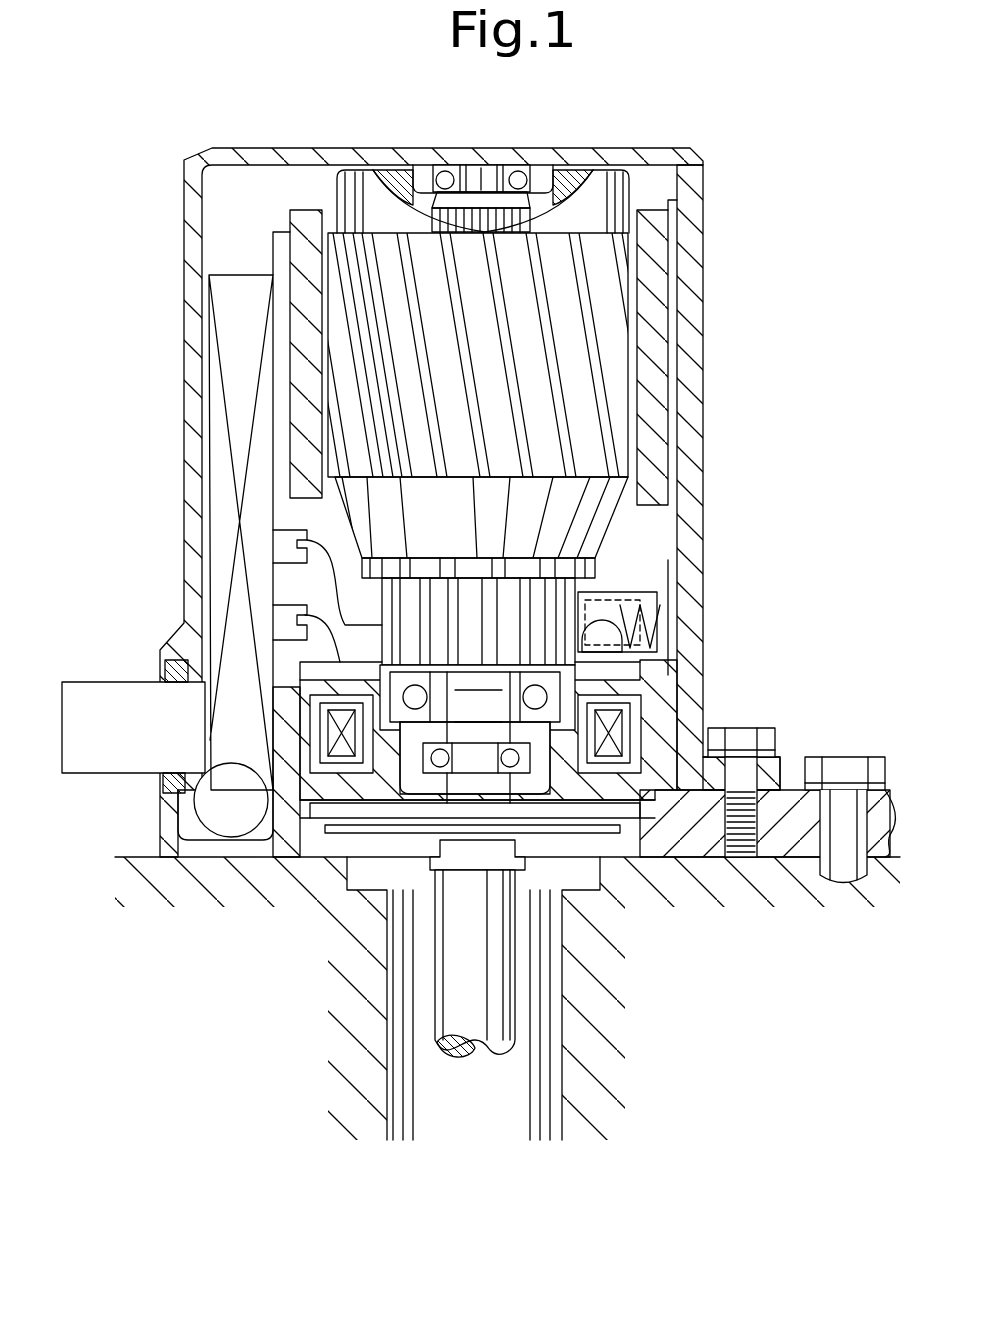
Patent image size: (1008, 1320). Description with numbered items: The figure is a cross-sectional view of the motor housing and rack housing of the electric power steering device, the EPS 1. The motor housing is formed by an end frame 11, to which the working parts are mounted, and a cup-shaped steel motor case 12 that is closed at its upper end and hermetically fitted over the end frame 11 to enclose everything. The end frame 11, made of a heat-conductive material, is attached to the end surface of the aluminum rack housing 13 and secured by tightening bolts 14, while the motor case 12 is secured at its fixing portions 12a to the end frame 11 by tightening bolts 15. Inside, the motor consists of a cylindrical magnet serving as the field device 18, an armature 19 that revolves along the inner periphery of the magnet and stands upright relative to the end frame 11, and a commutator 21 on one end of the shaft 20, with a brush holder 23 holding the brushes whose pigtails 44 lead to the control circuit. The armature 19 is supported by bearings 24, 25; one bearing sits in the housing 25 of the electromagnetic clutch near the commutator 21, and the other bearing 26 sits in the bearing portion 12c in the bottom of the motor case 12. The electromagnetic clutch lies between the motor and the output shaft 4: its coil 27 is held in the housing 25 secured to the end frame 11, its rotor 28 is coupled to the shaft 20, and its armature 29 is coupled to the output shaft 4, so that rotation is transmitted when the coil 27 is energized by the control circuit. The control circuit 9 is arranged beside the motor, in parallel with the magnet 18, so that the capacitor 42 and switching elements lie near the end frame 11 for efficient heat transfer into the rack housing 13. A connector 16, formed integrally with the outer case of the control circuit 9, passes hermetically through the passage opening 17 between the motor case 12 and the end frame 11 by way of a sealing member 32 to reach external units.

The EPS 1 is at (612, 125).
The output shaft 4 is at (498, 1015).
The control circuit 9 is at (238, 398).
The end frame 11 is at (885, 862).
The motor case 12 is at (703, 250).
The fixing portions 12a is at (770, 768).
The bearing portion 12c is at (437, 170).
The rack housing 13 is at (118, 853).
The bolts 14 is at (860, 758).
The bolts 15 is at (760, 730).
The connector 16 is at (90, 682).
The passage opening 17 is at (165, 678).
The field device 18 is at (655, 325).
The armature 19 is at (595, 521).
The shaft 20 is at (625, 640).
The commutator 21 is at (545, 595).
The brush holder 23 is at (640, 592).
The bearing 24 is at (565, 690).
The housing 25 is at (545, 705).
The bearing 26 is at (538, 165).
The coil 27 is at (635, 722).
The rotor 28 is at (333, 790).
The armature 29 is at (625, 810).
The sealing member 32 is at (175, 785).
The capacitor 42 is at (230, 823).
The pigtails 44 is at (305, 572).